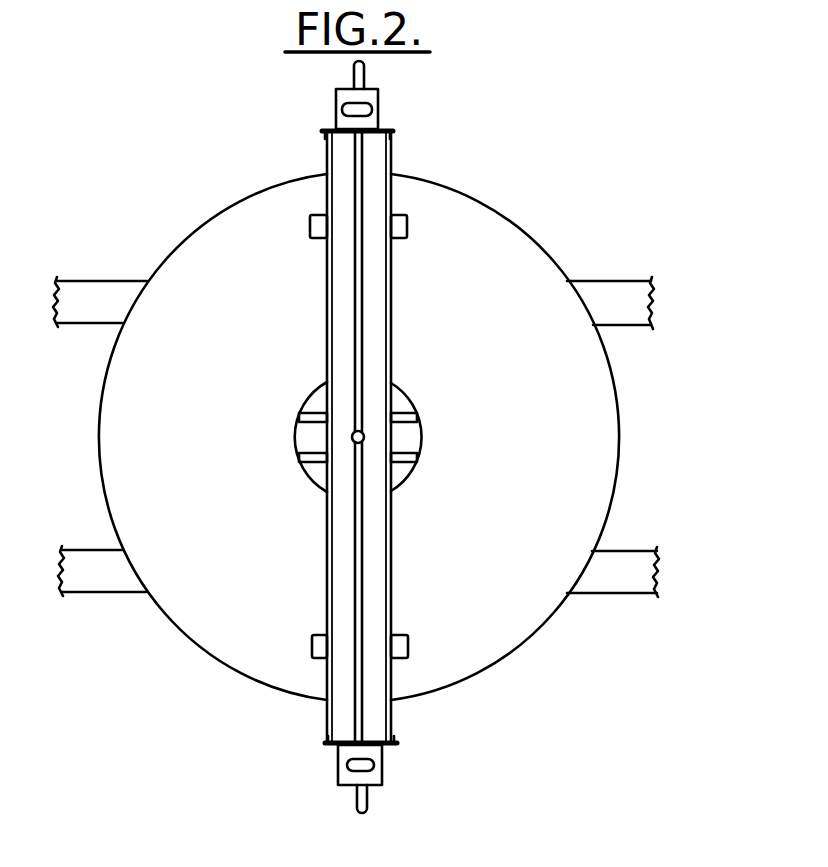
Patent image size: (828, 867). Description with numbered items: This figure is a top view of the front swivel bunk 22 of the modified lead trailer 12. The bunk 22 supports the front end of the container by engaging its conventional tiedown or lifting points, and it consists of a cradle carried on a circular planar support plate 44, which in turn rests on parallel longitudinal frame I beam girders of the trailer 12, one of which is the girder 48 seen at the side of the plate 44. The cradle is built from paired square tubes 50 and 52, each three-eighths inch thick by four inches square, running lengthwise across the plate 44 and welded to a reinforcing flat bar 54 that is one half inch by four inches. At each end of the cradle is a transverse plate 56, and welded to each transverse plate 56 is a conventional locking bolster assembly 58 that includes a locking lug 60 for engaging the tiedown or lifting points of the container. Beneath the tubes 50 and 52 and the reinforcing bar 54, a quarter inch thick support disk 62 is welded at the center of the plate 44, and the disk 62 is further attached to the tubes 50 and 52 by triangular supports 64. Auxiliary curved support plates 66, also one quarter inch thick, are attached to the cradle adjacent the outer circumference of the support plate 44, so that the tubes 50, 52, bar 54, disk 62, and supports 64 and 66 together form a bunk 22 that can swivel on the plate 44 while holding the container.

The modified lead trailer 12 is at (668, 570).
The front swivel bunk 22 is at (512, 205).
The circular planar support plate 44 is at (218, 365).
The longitudinal frame I beam girder 48 is at (632, 594).
The square tube 50 is at (327, 717).
The square tube 52 is at (393, 718).
The reinforcing flat bar 54 is at (355, 557).
The transverse plate 56 is at (390, 129).
The locking bolster assembly 58 is at (337, 105).
The locking lug 60 is at (363, 104).
The support disk 62 is at (408, 435).
The triangular support 64 is at (313, 413).
The auxiliary curved support plate 66 is at (392, 436).